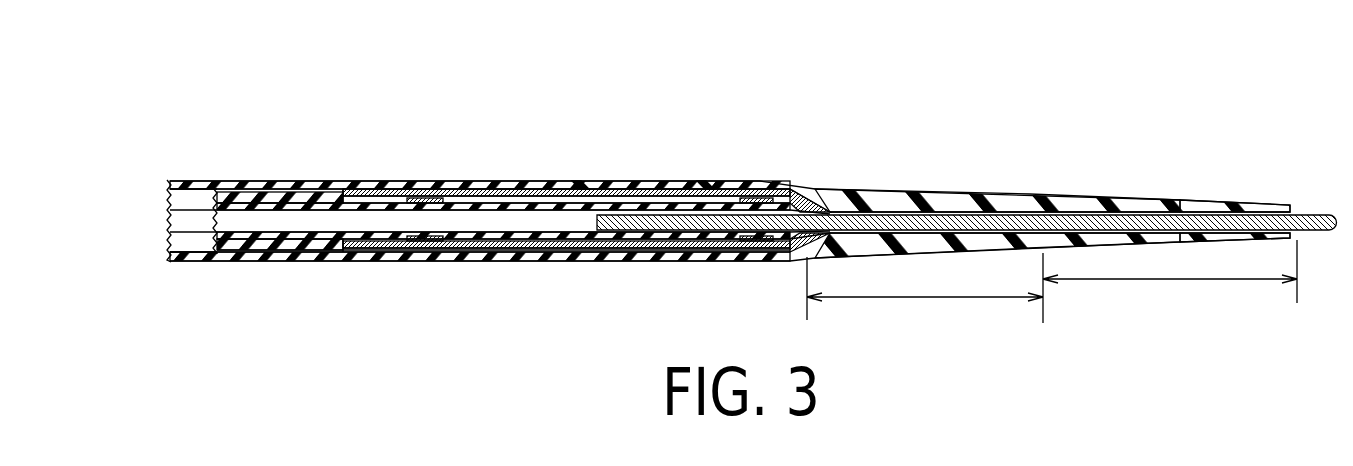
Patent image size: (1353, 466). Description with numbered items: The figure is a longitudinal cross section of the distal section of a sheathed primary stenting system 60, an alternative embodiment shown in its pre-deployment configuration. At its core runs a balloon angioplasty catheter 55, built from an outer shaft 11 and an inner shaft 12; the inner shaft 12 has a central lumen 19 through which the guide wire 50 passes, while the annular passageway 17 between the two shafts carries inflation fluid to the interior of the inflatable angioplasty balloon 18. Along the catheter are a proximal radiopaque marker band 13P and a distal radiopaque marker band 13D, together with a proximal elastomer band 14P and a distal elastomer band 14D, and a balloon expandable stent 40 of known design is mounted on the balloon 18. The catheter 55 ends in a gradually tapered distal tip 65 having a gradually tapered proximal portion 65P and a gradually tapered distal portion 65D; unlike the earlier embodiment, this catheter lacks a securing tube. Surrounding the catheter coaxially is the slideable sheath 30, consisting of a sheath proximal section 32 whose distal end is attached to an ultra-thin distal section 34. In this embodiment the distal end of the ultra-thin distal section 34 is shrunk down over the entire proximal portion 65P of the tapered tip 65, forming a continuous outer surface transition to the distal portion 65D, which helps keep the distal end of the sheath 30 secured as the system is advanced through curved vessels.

The outer shaft 11 is at (233, 183).
The inner shaft 12 is at (203, 182).
The proximal radiopaque marker band 13P is at (435, 241).
The distal radiopaque marker band 13D is at (738, 262).
The proximal elastomer band 14P is at (378, 185).
The distal elastomer band 14D is at (785, 183).
The annular passageway 17 is at (168, 231).
The inflatable angioplasty balloon 18 is at (538, 263).
The central lumen 19 is at (220, 224).
The slideable sheath 30 is at (168, 262).
The sheath proximal section 32 is at (190, 258).
The ultra-thin distal section 34 is at (577, 182).
The balloon expandable stent 40 is at (702, 182).
The guide wire 50 is at (1323, 212).
The balloon angioplasty catheter 55 is at (1180, 193).
The sheathed primary stenting system 60 is at (815, 113).
The gradually tapered distal tip 65 is at (1117, 200).
The gradually tapered proximal portion 65P is at (920, 298).
The gradually tapered distal portion 65D is at (1150, 280).